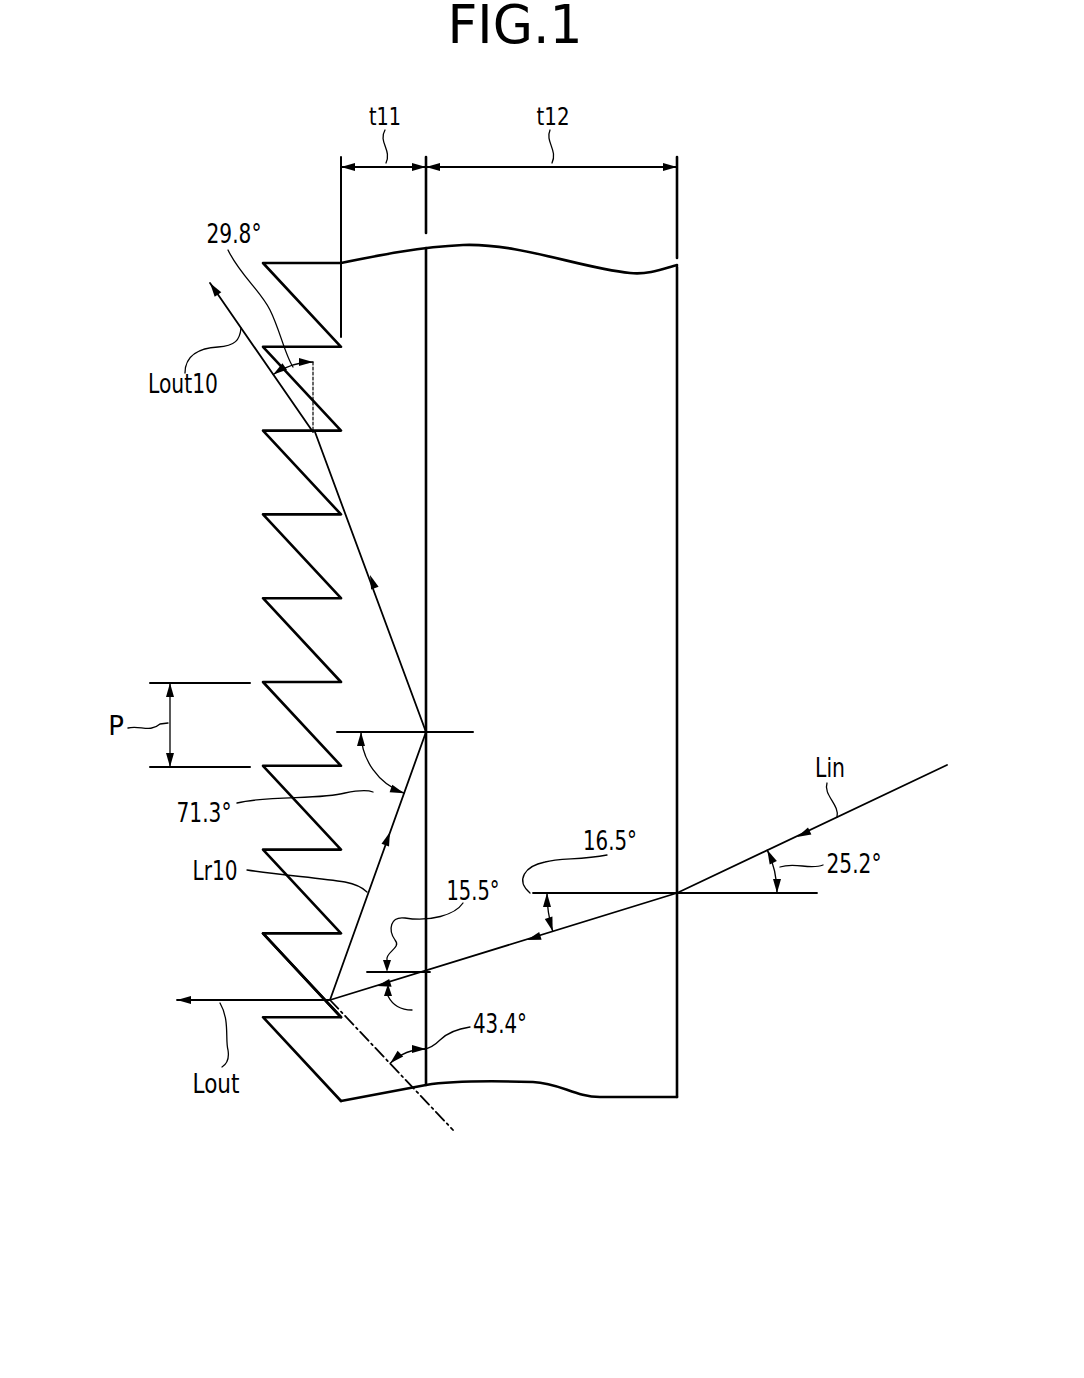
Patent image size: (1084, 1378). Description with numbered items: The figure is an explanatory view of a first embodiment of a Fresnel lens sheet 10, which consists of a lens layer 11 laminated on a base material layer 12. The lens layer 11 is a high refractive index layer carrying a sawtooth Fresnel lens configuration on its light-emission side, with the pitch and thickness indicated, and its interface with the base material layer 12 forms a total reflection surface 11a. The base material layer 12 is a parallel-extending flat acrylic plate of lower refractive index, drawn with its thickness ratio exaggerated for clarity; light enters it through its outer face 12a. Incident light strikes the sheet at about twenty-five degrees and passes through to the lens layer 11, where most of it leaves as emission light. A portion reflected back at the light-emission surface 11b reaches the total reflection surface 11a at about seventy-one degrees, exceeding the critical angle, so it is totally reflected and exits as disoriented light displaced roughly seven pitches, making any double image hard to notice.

The Fresnel lens sheet 10 is at (490, 1210).
The lens layer 11 is at (376, 1083).
The total reflection surface 11a is at (426, 557).
The light-emission surface 11b is at (287, 963).
The base material layer 12 is at (630, 1068).
The light entrance surface of plate 12a is at (677, 997).